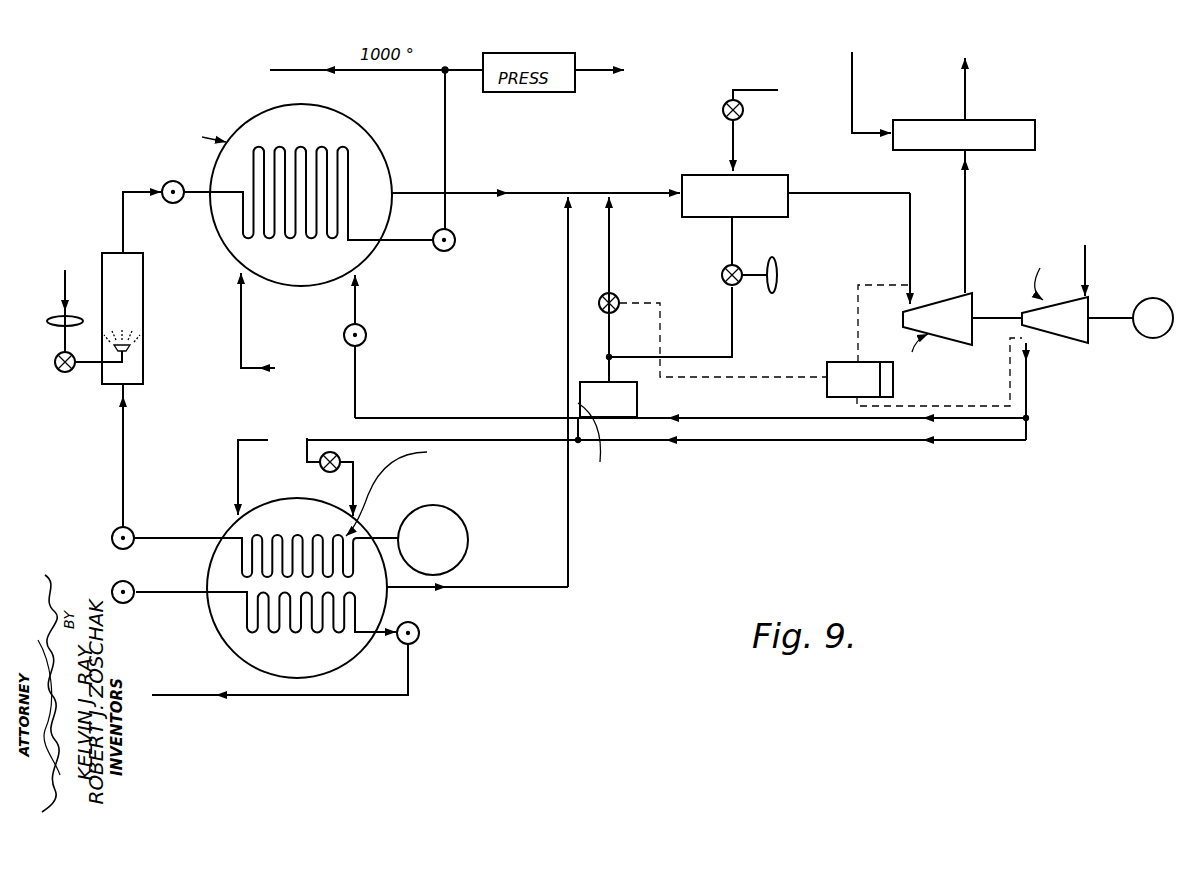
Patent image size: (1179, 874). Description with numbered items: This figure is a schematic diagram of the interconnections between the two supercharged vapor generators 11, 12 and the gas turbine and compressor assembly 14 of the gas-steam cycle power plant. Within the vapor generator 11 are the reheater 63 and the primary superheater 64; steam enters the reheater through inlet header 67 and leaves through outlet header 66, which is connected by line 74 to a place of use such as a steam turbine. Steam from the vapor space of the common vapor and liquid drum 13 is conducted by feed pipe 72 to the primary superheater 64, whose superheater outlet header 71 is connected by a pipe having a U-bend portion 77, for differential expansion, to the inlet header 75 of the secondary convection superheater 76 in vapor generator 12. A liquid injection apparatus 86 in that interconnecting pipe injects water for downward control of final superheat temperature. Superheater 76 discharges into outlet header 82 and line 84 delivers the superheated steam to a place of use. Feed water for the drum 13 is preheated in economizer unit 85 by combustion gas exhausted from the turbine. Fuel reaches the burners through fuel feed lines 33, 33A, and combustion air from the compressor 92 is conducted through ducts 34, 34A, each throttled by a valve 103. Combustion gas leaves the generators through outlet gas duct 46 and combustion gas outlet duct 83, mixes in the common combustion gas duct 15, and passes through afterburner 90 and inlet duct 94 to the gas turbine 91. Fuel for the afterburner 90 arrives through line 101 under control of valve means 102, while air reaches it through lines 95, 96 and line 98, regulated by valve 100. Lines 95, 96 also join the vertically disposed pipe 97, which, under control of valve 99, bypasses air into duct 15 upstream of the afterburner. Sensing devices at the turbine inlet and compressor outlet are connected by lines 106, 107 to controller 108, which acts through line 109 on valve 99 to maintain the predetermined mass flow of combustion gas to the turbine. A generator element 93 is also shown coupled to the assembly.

The vapor generator 11 is at (206, 630).
The vapor generator 12 is at (381, 126).
The vapor and liquid drum 13 is at (453, 512).
The gas turbine and compressor assembly 14 is at (1017, 263).
The combustion gas duct 15 is at (632, 190).
The fuel feed line 33 is at (238, 465).
The fuel feed line 33A is at (242, 320).
The combustion air duct 34 is at (487, 416).
The combustion air duct 34A is at (403, 416).
The outlet gas duct 46 is at (565, 325).
The reheater 63 is at (367, 605).
The superheater 64 is at (235, 533).
The outlet header 66 is at (420, 642).
The inlet header 67 is at (130, 580).
The superheater outlet header 71 is at (134, 528).
The feed pipe 72 is at (385, 538).
The line 74 is at (293, 697).
The inlet header 75 is at (177, 182).
The convection superheater 76 is at (352, 172).
The U-bend portion 77 is at (135, 185).
The outlet header 82 is at (456, 240).
The combustion gas outlet duct 83 is at (490, 190).
The line 84 is at (405, 244).
The economizer unit 85 is at (1035, 152).
The liquid injection apparatus 86 is at (130, 358).
The afterburner 90 is at (795, 190).
The gas turbine 91 is at (929, 302).
The compressor 92 is at (1070, 342).
The generator 93 is at (1152, 340).
The inlet duct 94 is at (910, 193).
The line 95 is at (606, 448).
The line 96 is at (637, 402).
The pipe 97 is at (609, 265).
The line 98 is at (695, 357).
The valve 99 is at (620, 298).
The valve 100 is at (748, 262).
The line 101 is at (733, 145).
The valve means 102 is at (745, 112).
The valve 103 is at (366, 333).
The line 106 is at (858, 283).
The line 107 is at (973, 410).
The controller 108 is at (832, 362).
The line 109 is at (755, 377).